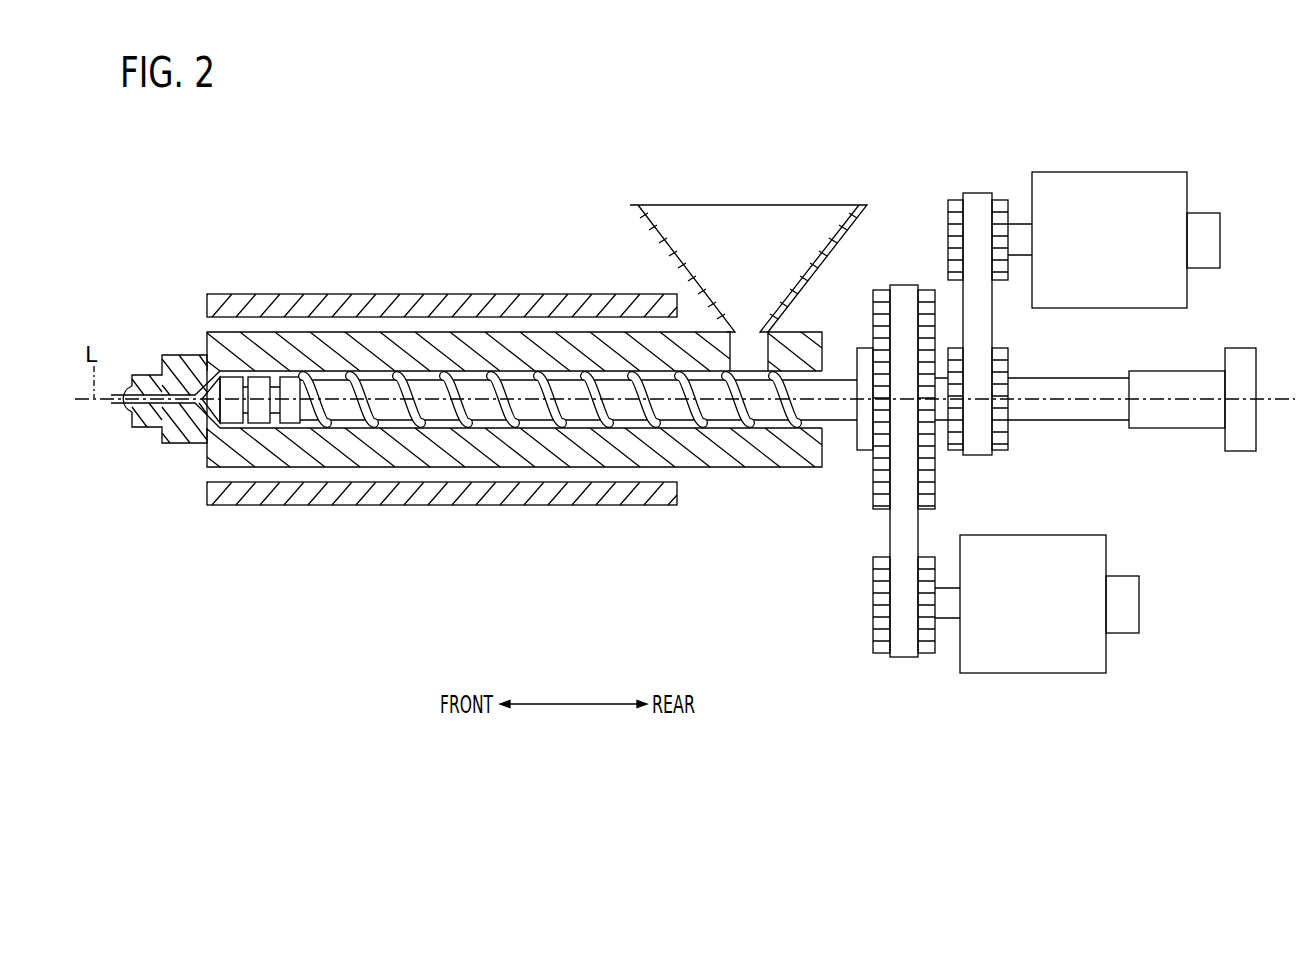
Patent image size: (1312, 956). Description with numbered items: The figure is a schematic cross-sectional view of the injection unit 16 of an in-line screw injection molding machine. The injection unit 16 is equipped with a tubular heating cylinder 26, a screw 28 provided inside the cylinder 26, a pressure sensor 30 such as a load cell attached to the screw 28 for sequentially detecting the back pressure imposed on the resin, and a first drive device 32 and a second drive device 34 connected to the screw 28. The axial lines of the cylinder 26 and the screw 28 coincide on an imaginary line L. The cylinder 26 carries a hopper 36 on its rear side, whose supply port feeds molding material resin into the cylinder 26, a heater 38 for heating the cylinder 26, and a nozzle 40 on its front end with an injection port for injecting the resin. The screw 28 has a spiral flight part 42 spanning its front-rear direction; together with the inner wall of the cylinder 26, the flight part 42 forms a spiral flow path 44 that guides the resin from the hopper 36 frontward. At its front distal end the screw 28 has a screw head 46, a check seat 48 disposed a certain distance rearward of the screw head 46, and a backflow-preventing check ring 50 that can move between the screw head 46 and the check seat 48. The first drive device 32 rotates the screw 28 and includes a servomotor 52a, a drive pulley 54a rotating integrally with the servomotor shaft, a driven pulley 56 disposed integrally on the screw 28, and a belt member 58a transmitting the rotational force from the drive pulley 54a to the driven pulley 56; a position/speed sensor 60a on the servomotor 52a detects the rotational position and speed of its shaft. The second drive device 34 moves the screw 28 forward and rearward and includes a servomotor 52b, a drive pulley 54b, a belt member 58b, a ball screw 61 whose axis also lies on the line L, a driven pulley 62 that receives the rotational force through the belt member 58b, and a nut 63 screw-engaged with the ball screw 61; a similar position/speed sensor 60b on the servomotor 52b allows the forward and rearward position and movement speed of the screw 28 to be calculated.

The injection unit 16 is at (492, 173).
The heating cylinder 26 is at (400, 347).
The screw 28 is at (506, 481).
The pressure sensor 30 is at (1245, 372).
The first drive device 32 is at (858, 543).
The second drive device 34 is at (920, 197).
The hopper 36 is at (644, 221).
The heater 38 is at (290, 305).
The nozzle 40 is at (113, 385).
The flight part 42 is at (642, 405).
The spiral flow path 44 is at (538, 428).
The screw head 46 is at (215, 405).
The check seat 48 is at (298, 410).
The check ring 50 is at (262, 410).
The servomotor 52a is at (1058, 535).
The servomotor 52b is at (1137, 172).
The drive pulley 54a is at (873, 617).
The drive pulley 54b is at (1000, 200).
The driven pulley 56 is at (873, 481).
The belt member 58a is at (904, 657).
The belt member 58b is at (972, 193).
The position/speed sensor 60a is at (1128, 596).
The position/speed sensor 60b is at (1208, 232).
The ball screw 61 is at (1084, 410).
The driven pulley 62 is at (1003, 362).
The nut 63 is at (1168, 428).